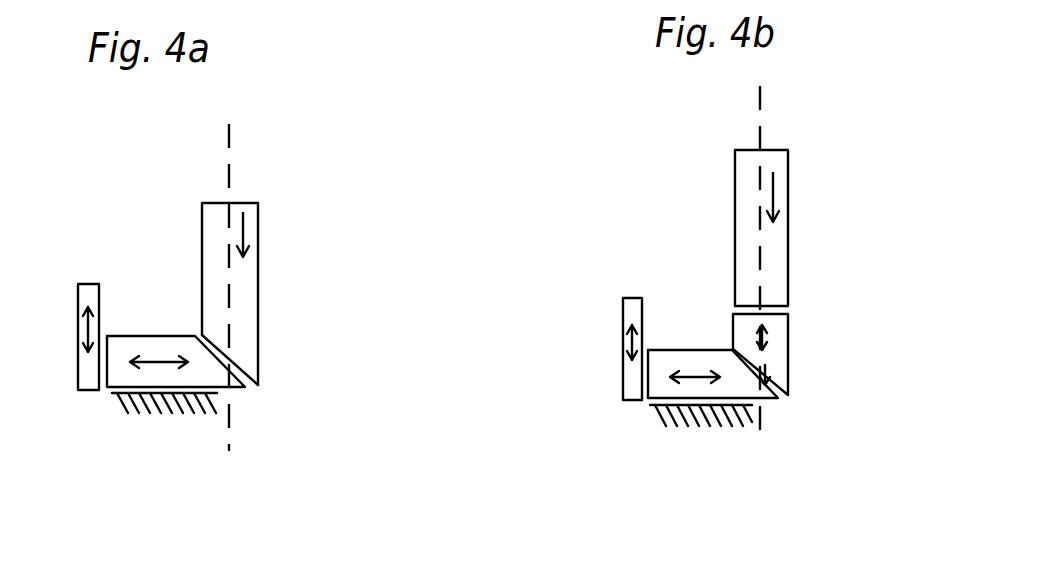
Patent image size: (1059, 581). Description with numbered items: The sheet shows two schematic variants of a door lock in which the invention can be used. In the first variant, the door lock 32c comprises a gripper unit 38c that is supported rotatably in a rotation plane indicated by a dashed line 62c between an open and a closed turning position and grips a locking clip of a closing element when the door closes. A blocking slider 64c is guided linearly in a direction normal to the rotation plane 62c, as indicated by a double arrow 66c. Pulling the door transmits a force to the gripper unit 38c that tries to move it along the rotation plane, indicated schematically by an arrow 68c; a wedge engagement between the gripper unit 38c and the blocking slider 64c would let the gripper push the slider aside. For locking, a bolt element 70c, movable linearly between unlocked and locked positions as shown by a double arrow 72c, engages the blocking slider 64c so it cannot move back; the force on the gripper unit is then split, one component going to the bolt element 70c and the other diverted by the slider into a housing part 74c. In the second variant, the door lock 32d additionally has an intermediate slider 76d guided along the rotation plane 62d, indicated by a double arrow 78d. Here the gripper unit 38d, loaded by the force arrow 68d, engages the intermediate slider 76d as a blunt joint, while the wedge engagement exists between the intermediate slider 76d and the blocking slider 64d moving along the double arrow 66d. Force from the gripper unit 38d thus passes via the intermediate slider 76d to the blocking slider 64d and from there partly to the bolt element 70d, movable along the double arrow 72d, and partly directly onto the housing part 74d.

In FIG. 4A, the door lock 32c is at (341, 158).
In FIG. 4A, the rotation plane 62c is at (234, 130).
In FIG. 4A, the arrow 68c is at (258, 227).
In FIG. 4A, the gripper unit 38c is at (258, 330).
In FIG. 4A, the blocking slider 64c is at (137, 335).
In FIG. 4A, the double arrow 66c is at (160, 360).
In FIG. 4A, the double arrow 72c is at (78, 333).
In FIG. 4A, the bolt element 70c is at (78, 367).
In FIG. 4A, the housing part 74c is at (152, 418).
In FIG. 4B, the door lock 32d is at (675, 188).
In FIG. 4B, the rotation plane 62d is at (765, 100).
In FIG. 4B, the arrow 68d is at (788, 185).
In FIG. 4B, the gripper unit 38d is at (790, 270).
In FIG. 4B, the intermediate slider 76d is at (790, 378).
In FIG. 4B, the double arrow 78d is at (788, 344).
In FIG. 4B, the blocking slider 64d is at (664, 350).
In FIG. 4B, the double arrow 66d is at (696, 373).
In FIG. 4B, the double arrow 72d is at (622, 344).
In FIG. 4B, the bolt element 70d is at (622, 378).
In FIG. 4B, the housing part 74d is at (672, 427).